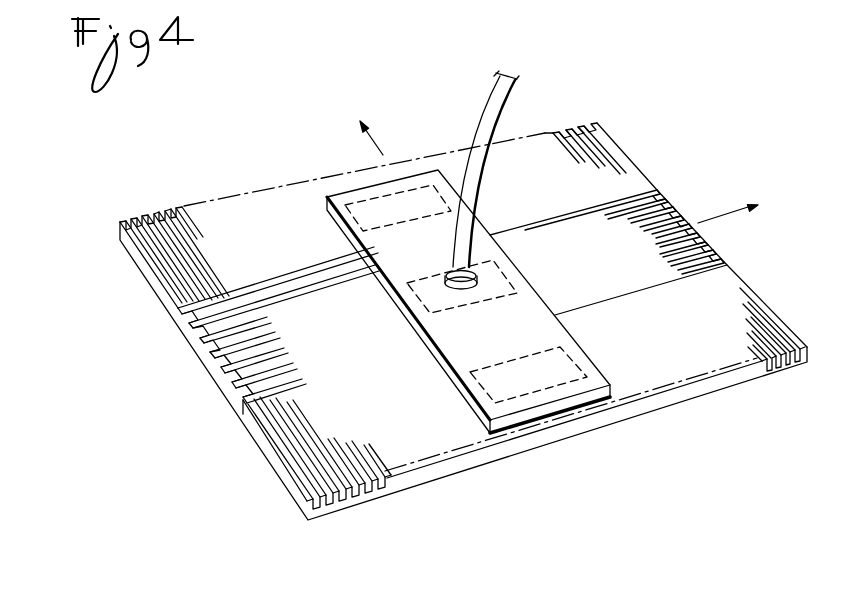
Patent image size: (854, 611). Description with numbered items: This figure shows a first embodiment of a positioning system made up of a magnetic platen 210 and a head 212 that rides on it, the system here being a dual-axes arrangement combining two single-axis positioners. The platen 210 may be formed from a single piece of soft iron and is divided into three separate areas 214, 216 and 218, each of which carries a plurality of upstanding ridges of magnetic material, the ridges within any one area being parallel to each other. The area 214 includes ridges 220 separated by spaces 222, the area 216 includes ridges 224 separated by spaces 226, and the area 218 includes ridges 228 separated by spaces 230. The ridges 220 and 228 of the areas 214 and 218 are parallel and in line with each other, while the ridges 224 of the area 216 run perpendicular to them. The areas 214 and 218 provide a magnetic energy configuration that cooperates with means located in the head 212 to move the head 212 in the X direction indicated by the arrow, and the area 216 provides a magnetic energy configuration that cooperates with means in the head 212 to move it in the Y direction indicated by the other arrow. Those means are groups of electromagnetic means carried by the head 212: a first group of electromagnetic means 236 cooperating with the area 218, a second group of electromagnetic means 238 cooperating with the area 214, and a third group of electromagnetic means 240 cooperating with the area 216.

The platen 210 is at (233, 462).
The head 212 is at (513, 308).
The area 214 is at (230, 205).
The area 216 is at (270, 313).
The area 218 is at (430, 440).
The ridges 220 is at (130, 218).
The spaces 222 is at (168, 213).
The ridges 224 is at (215, 345).
The spaces 226 is at (220, 378).
The ridges 228 is at (327, 496).
The spaces 230 is at (350, 490).
The first group of electromagnetic means 236 is at (478, 402).
The second group of electromagnetic means 238 is at (348, 233).
The third group of electromagnetic means 240 is at (406, 312).